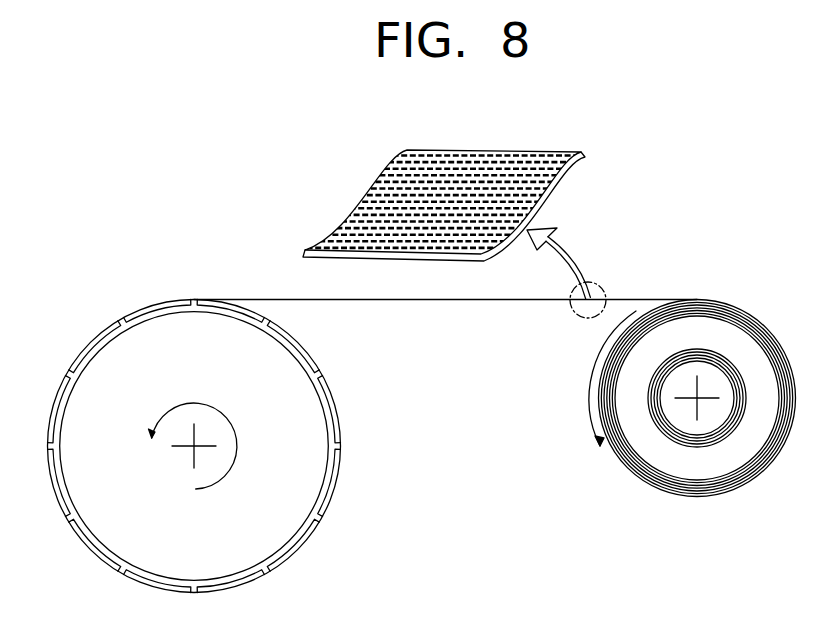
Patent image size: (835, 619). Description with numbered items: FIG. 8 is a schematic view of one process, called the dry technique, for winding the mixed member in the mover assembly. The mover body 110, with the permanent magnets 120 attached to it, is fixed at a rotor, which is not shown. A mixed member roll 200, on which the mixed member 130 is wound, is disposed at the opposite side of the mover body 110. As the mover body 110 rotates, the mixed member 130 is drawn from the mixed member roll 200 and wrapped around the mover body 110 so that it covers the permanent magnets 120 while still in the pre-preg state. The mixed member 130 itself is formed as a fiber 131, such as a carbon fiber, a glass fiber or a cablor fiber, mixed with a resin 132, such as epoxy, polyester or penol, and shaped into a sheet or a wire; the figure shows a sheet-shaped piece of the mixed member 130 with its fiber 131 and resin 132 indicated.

The mover body 110 is at (336, 421).
The permanent magnets 120 is at (338, 483).
The mixed member 130 is at (547, 280).
The fiber 131 is at (520, 157).
The resin 132 is at (581, 160).
The mixed member roll 200 is at (625, 472).